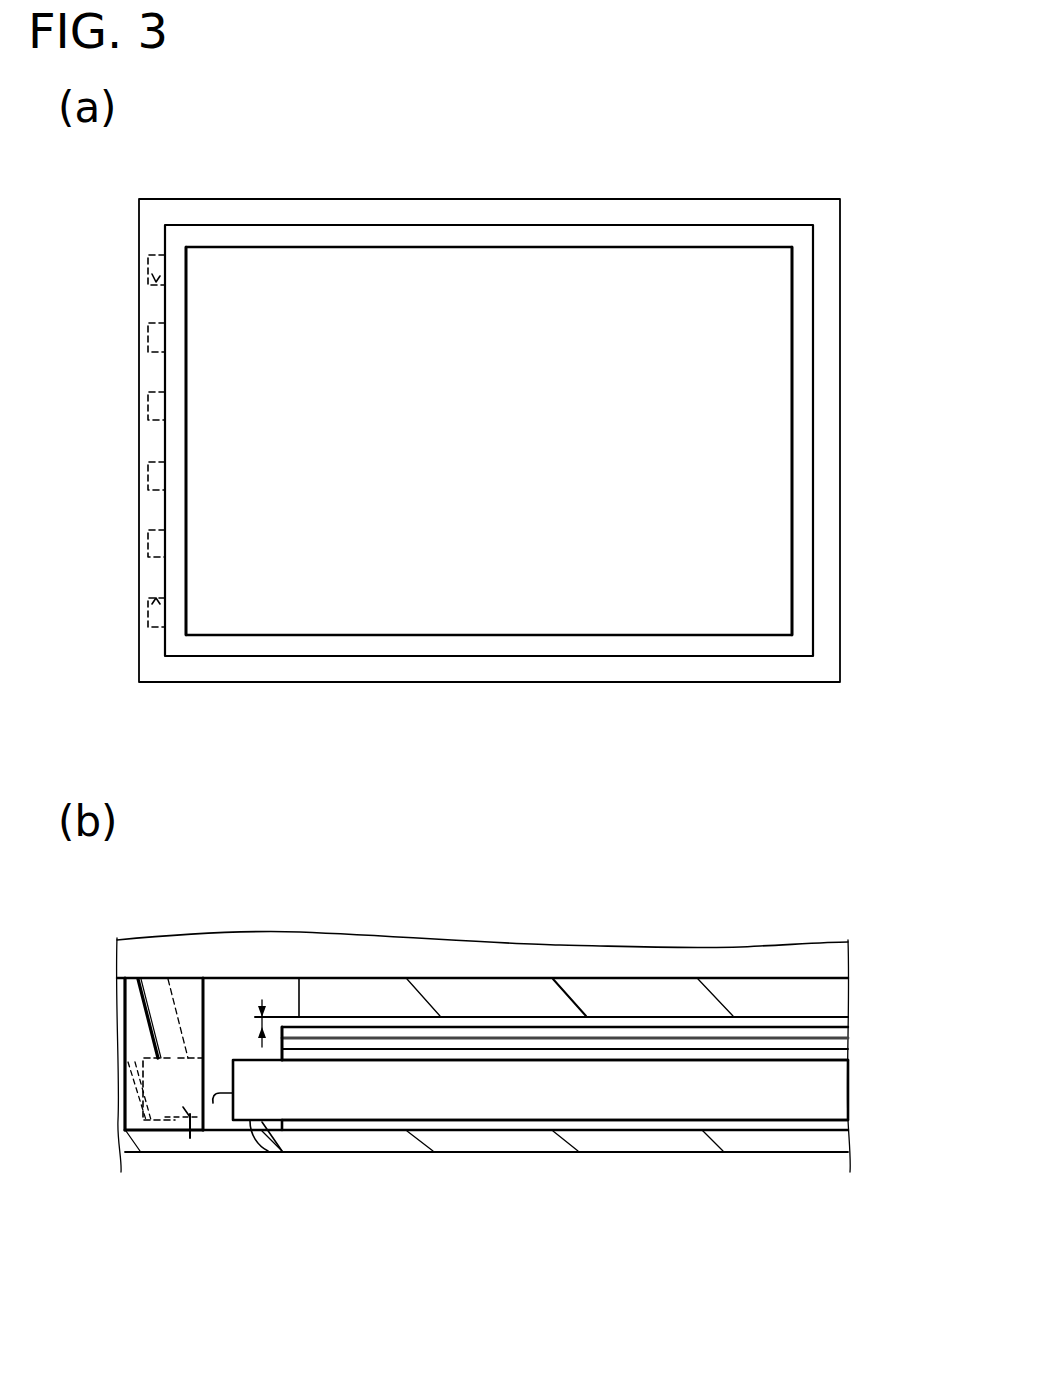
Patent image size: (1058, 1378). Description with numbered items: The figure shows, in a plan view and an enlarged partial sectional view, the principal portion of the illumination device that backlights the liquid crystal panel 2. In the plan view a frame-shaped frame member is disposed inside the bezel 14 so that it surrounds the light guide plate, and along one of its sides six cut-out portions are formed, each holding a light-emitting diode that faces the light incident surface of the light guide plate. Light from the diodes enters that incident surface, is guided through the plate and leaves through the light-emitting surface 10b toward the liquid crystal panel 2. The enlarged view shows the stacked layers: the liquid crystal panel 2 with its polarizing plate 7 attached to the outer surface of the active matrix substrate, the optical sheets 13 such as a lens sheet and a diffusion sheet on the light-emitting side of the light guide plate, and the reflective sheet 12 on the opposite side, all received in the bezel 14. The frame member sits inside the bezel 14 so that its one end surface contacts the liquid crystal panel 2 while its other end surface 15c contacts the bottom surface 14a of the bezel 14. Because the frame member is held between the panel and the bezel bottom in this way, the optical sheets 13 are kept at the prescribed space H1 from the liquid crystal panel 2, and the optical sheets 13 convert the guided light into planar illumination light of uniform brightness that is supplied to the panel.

The liquid crystal panel 2 is at (643, 949).
The polarizing plate 7 is at (822, 997).
The light-emitting surface 10b is at (634, 268).
The reflective sheet 12 is at (833, 1125).
The optical sheets 13 is at (810, 1031).
The bezel 14 is at (438, 1153).
The bottom surface 14a is at (258, 1155).
The other end surface 15c is at (157, 1133).
The prescribed space/distance H1 is at (260, 1020).